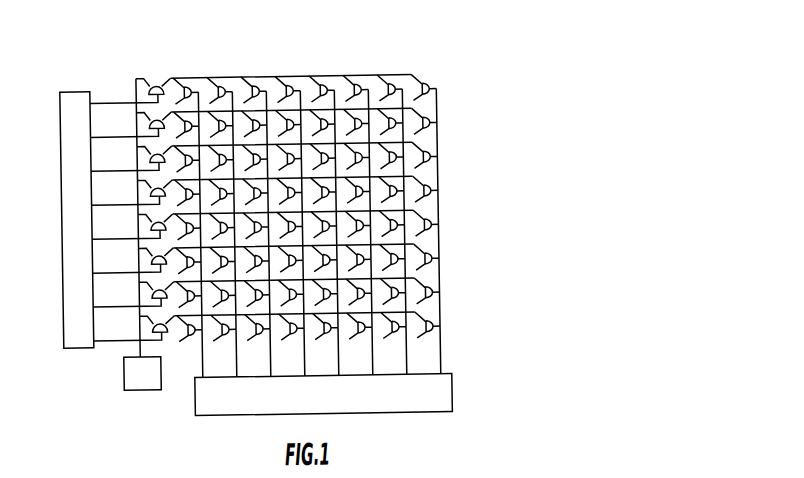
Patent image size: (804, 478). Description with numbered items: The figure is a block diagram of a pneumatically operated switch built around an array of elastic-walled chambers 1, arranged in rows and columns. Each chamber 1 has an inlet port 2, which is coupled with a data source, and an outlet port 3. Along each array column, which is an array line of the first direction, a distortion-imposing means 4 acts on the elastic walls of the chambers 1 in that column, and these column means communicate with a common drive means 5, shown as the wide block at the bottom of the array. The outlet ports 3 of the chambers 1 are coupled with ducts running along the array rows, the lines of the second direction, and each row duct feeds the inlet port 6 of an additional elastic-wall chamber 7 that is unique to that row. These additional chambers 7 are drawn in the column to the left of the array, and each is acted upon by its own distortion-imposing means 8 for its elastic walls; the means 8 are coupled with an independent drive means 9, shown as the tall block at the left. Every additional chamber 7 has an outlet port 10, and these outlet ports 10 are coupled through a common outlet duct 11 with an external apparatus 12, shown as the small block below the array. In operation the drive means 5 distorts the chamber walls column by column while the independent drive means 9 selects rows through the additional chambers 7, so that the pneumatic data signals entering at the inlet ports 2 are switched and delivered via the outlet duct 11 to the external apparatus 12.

The chamber 1 is at (189, 86).
The inlet port 2 is at (438, 100).
The outlet port 3 is at (422, 84).
The distortion-imposing means 4 is at (270, 351).
The drive means 5 is at (324, 395).
The inlet port of additional chamber 6 is at (172, 77).
The additional elastic-wall chamber 7 is at (162, 84).
The distortion-imposing means for additional chambers 8 is at (106, 100).
The independent drive means 9 is at (77, 220).
The outlet port of additional chamber 10 is at (157, 84).
The outlet duct 11 is at (137, 218).
The external apparatus 12 is at (143, 374).